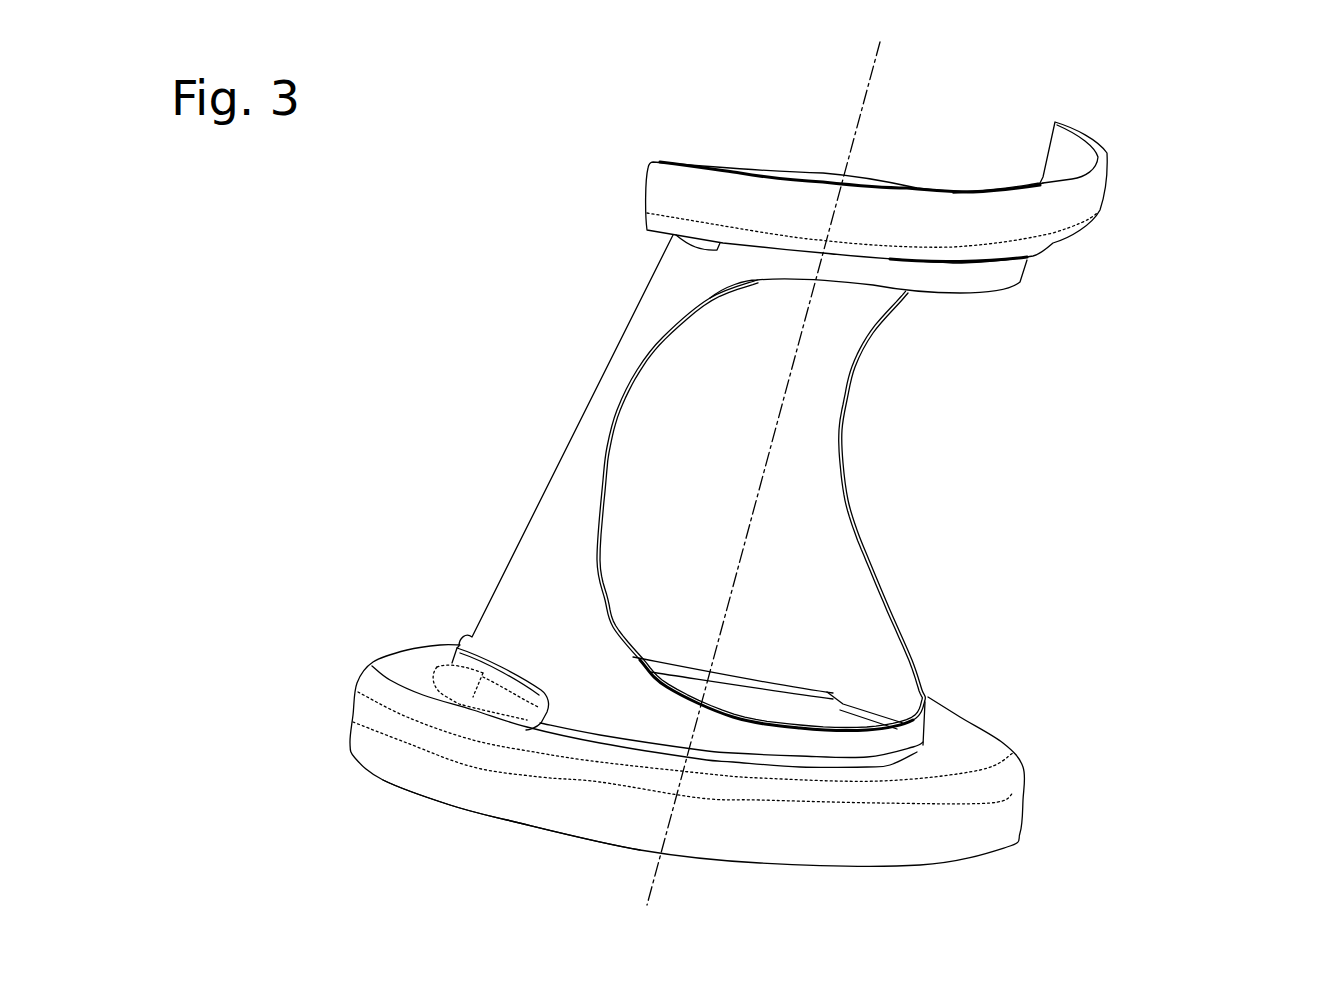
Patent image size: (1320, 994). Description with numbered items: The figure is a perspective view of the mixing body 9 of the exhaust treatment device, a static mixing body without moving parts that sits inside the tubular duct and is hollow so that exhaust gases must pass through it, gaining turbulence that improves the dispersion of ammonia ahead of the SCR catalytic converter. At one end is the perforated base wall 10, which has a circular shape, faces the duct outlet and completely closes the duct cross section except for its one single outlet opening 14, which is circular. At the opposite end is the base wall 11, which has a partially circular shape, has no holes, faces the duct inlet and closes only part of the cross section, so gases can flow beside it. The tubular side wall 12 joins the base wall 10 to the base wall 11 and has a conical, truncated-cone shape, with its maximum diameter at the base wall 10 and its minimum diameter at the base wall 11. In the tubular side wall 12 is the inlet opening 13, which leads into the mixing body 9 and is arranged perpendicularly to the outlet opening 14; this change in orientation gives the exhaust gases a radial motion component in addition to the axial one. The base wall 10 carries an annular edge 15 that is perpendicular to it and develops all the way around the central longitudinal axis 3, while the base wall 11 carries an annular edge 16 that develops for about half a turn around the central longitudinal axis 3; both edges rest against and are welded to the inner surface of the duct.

The central longitudinal axis 3 is at (875, 63).
The mixing body 9 is at (1175, 557).
The perforated base wall 10 is at (415, 678).
The base wall 11 is at (820, 175).
The tubular side wall 12 is at (538, 560).
The inlet opening 13 is at (849, 463).
The outlet opening 14 is at (749, 703).
The annular edge 15 is at (452, 782).
The annular edge 16 is at (1075, 205).